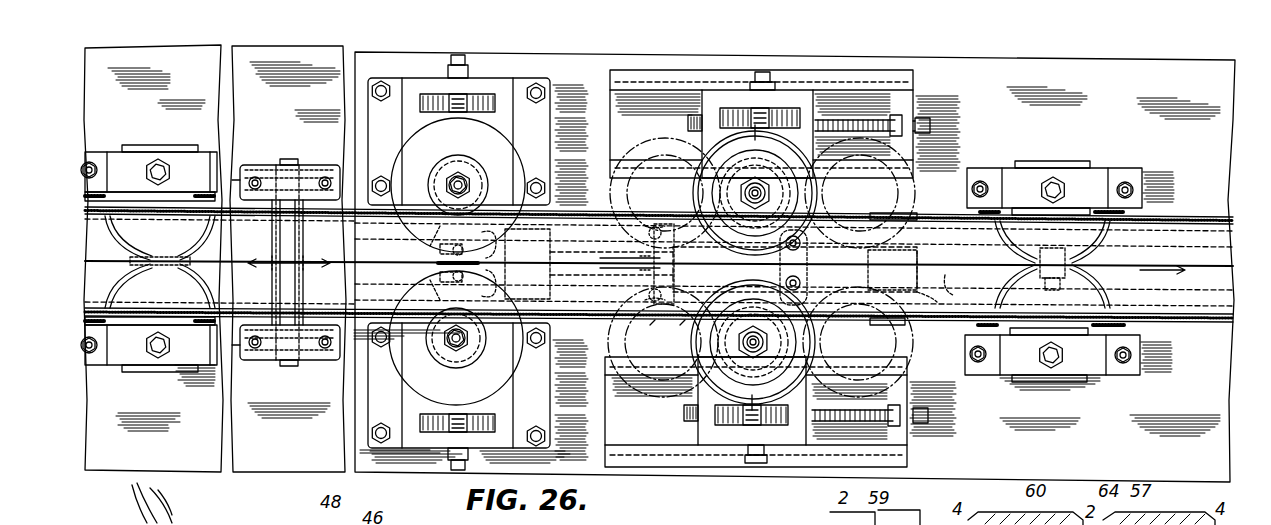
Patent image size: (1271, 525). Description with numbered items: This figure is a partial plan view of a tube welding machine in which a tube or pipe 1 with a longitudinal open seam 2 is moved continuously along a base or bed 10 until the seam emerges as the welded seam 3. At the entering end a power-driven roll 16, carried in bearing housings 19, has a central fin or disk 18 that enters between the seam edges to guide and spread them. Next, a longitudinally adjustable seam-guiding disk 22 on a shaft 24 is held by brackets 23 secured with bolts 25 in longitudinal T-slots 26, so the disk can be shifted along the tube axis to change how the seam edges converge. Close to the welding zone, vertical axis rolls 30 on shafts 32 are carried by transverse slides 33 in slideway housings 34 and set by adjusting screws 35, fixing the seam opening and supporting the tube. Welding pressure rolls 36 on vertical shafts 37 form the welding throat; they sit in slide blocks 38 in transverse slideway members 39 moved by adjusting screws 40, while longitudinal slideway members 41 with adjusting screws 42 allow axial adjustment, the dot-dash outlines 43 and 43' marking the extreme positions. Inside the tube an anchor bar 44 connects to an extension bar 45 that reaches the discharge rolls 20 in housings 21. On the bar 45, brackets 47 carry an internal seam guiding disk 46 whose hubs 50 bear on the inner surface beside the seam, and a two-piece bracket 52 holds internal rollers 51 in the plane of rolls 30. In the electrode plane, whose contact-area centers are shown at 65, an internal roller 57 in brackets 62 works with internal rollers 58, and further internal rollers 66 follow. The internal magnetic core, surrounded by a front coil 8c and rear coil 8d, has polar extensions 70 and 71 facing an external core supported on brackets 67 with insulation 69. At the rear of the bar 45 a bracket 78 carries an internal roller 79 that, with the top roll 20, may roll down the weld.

The tube or pipe 1 is at (1192, 320).
The longitudinal open seam 2 is at (100, 269).
The welded seam 3 is at (1200, 270).
The front internal coil 8c is at (641, 327).
The rear internal coil 8d is at (672, 327).
The base or bed 10 is at (140, 53).
The roll 16 is at (157, 210).
The central fin or disk 18 is at (150, 328).
The bearing housings 19 is at (183, 160).
The rolls 20 is at (1105, 230).
The housings 21 is at (1104, 168).
The longitudinally adjustable seam-guiding disk 22 is at (318, 260).
The brackets 23 is at (314, 178).
The shaft 24 is at (290, 165).
The bolts 25 is at (256, 178).
The T-slots 26 is at (236, 174).
The vertical axis rolls 30 is at (512, 158).
The shafts 32 is at (460, 187).
The transverse slides 33 is at (490, 100).
The slideway blocks or housings 34 is at (416, 84).
The adjusting screws 35 is at (463, 57).
The welding pressure rolls 36 is at (805, 192).
The vertical shafts 37 is at (755, 187).
The slide blocks 38 is at (765, 140).
The transverse slideway members 39 is at (720, 75).
The adjusting screws 40 is at (763, 71).
The longitudinal slideway members 41 is at (650, 69).
The adjusting screws 42 is at (870, 122).
The dot-dash outlines 43 is at (874, 267).
The dot-dash outlines 43' is at (646, 267).
The anchor bar or rod 44 is at (313, 267).
The extension bar or plate 45 is at (960, 283).
The seam guiding disk 46 is at (432, 258).
The brackets 47 is at (441, 262).
The hubs or roller extensions 50 is at (465, 264).
The internal rollers 51 is at (510, 234).
The two-piece bracket 52 is at (508, 252).
The internal roller 57 is at (670, 290).
The internal rollers 58 is at (648, 241).
The brackets 62 is at (652, 234).
The centers of electrode contact areas 65 is at (649, 257).
The internal rollers 66 is at (802, 244).
The brackets 67 is at (562, 195).
The insulation 69 is at (895, 248).
The front polar extension 70 is at (549, 296).
The rear polar extension 71 is at (932, 299).
The bracket 78 is at (1036, 259).
The internal roller 79 is at (1078, 256).